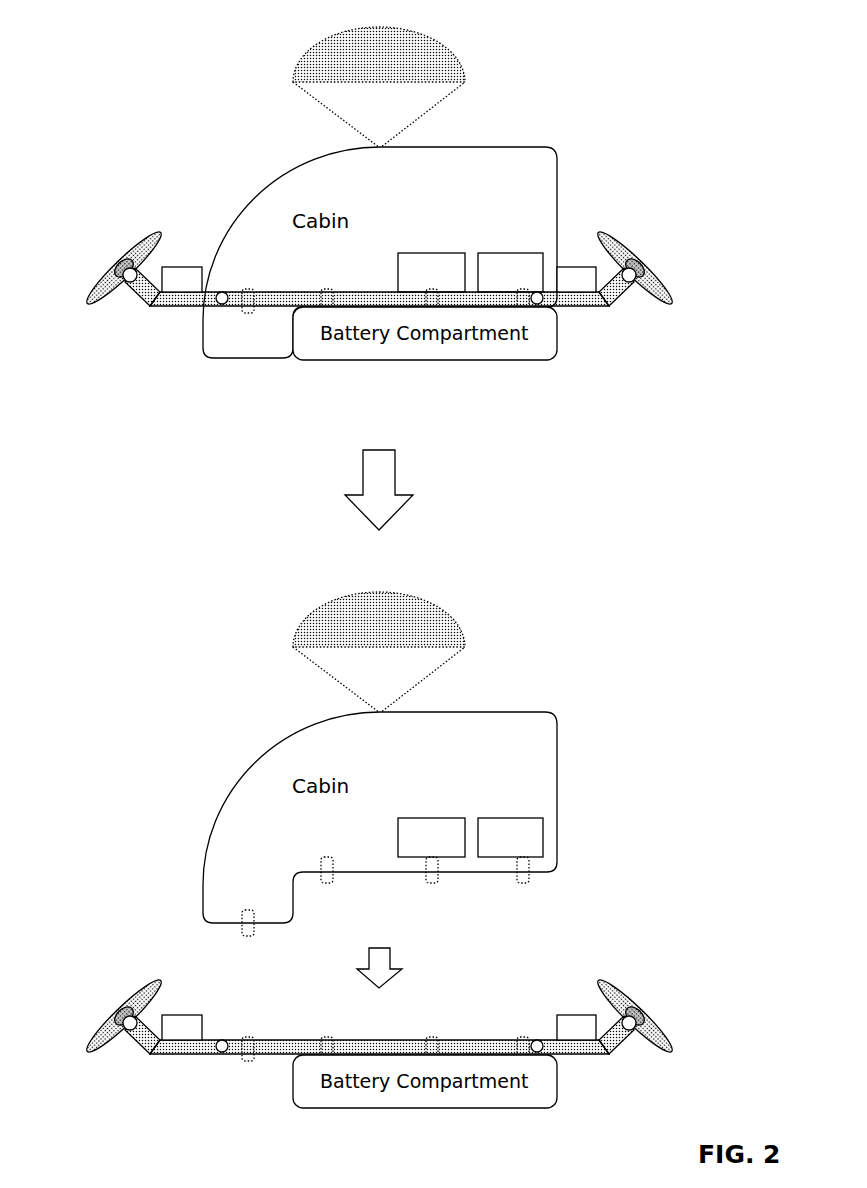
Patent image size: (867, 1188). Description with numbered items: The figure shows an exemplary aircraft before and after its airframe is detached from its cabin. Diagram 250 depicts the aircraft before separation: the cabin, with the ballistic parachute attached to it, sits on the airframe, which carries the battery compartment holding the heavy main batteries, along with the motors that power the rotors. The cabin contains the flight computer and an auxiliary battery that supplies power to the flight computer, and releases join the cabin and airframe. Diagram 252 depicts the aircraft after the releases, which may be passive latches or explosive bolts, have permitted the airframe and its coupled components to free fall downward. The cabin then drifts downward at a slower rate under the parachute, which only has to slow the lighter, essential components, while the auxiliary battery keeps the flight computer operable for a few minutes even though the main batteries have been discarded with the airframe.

The diagram 250 is at (637, 67).
The diagram 252 is at (637, 593).